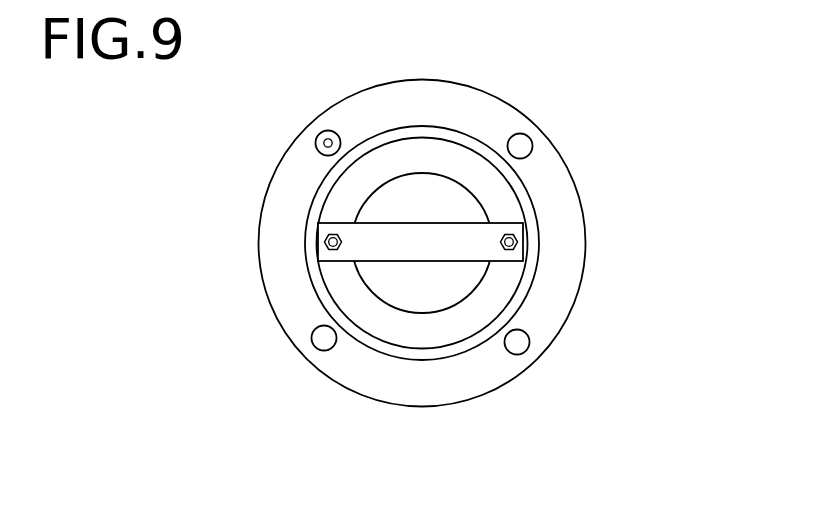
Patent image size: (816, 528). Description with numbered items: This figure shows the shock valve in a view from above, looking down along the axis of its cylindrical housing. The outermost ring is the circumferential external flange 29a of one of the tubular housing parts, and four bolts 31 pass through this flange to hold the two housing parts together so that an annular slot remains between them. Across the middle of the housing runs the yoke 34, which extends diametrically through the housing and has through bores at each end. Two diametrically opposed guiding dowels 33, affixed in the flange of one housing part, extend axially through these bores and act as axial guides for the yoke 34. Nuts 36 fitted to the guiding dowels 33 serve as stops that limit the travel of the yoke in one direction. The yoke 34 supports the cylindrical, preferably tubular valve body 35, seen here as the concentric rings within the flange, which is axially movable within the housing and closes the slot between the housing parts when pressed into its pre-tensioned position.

The circumferential external flange 29a is at (509, 117).
The bolts 31 is at (324, 338).
The guiding dowels 33 is at (516, 246).
The yoke 34 is at (418, 243).
The valve body 35 is at (375, 168).
The nuts 36 is at (322, 242).